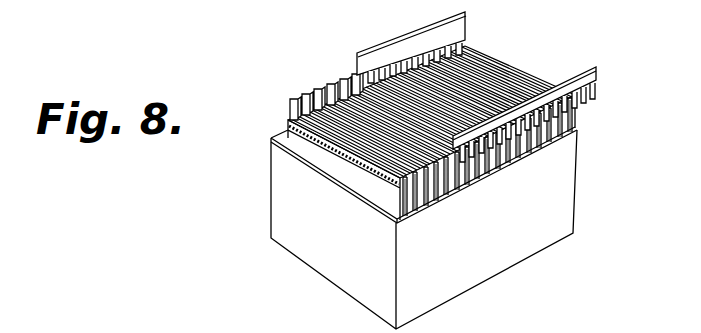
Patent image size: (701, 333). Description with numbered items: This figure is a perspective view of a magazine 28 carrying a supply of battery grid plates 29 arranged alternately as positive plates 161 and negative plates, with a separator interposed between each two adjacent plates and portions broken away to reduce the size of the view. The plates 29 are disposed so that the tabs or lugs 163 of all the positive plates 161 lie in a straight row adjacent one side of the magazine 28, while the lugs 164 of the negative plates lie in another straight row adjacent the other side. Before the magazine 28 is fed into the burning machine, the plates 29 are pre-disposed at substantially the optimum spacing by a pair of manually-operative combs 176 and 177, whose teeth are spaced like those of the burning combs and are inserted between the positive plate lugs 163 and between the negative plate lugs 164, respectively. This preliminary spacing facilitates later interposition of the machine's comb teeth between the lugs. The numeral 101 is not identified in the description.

The magazine 28 is at (366, 283).
The positive plate 161 is at (366, 188).
The battery grid plate 29 is at (320, 156).
The tab or lug of positive plate 163 is at (470, 177).
The lug of negative plate 164 is at (295, 100).
The manually-operative comb 176 is at (376, 60).
The manually-operative comb 177 is at (578, 72).
The heat sink assembly 101 is at (113, 332).